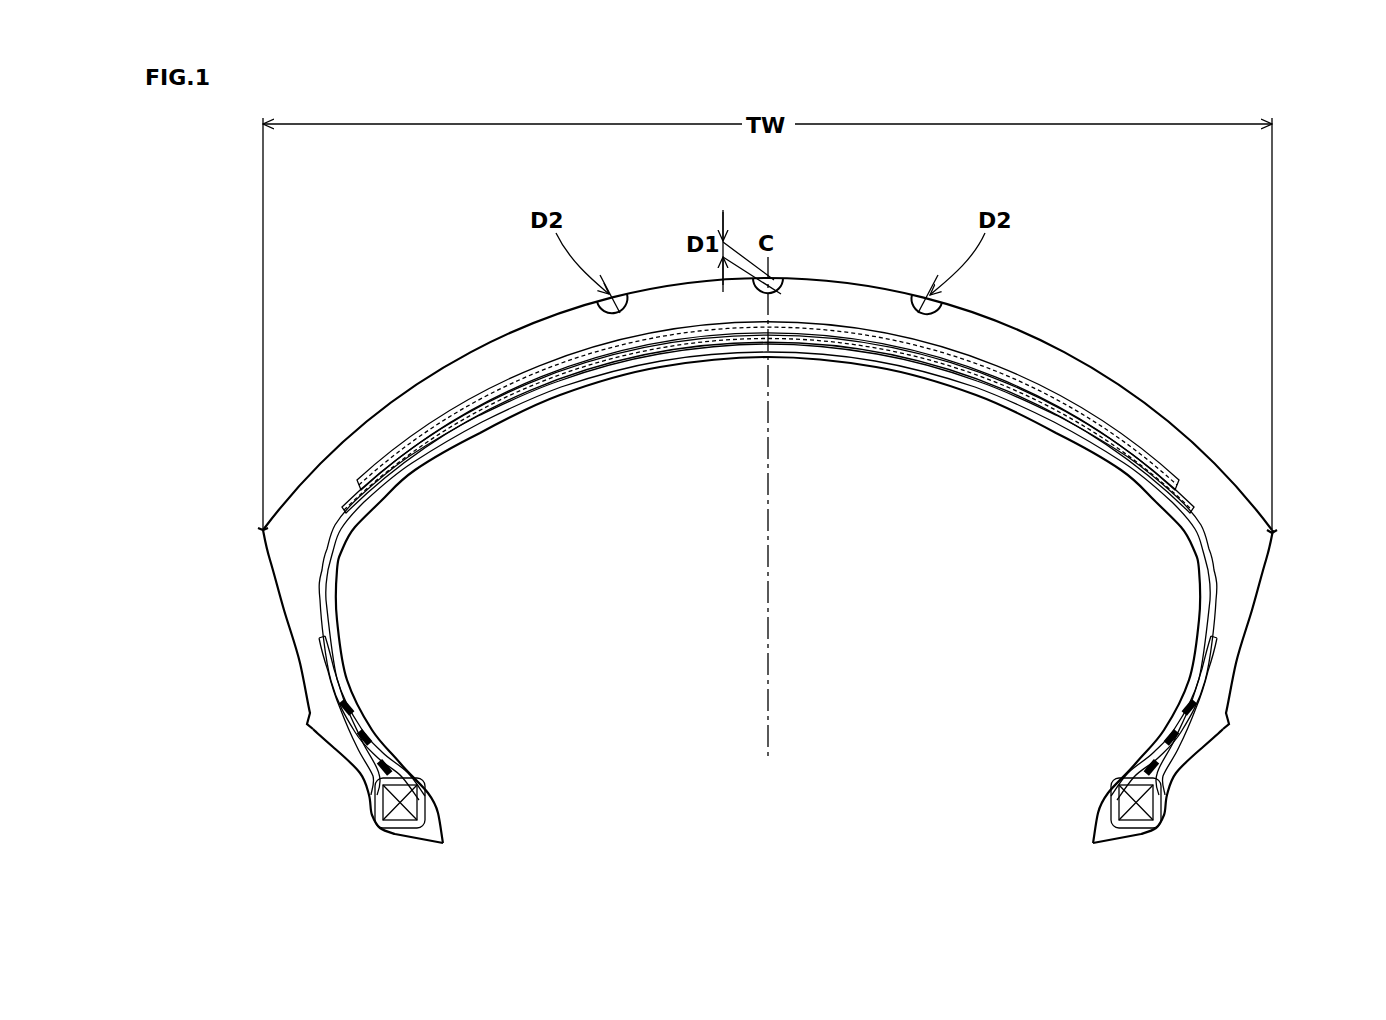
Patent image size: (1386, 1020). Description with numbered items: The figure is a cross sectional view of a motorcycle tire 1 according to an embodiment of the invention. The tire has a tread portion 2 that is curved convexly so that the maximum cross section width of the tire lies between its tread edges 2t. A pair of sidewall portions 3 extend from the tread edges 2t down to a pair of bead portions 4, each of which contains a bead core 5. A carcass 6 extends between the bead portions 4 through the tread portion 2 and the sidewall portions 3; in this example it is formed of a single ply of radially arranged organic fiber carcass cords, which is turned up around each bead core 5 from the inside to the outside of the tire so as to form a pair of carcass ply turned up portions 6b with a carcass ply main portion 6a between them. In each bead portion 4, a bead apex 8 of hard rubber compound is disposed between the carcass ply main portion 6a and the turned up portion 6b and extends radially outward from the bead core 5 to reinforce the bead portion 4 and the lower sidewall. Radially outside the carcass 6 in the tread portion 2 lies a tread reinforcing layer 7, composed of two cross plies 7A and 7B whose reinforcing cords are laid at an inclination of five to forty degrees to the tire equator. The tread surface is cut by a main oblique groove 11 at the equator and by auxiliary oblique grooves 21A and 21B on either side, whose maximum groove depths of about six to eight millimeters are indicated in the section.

The motorcycle tire 1 is at (1283, 242).
The tread portion 2 is at (1081, 355).
The tread edges 2t is at (262, 531).
The sidewall portions 3 is at (276, 645).
The bead portions 4 is at (352, 795).
The bead core 5 is at (418, 800).
The carcass 6 is at (1075, 563).
The carcass ply main portion 6a is at (1208, 598).
The carcass ply turned up portions 6b is at (1200, 656).
The tread reinforcing layer 7 is at (960, 503).
The cross ply 7A is at (950, 355).
The cross ply 7B is at (879, 345).
The bead apex 8 is at (381, 757).
The main oblique grooves 11 is at (777, 290).
The auxiliary oblique groove 21A is at (924, 290).
The auxiliary oblique groove 21B is at (617, 290).